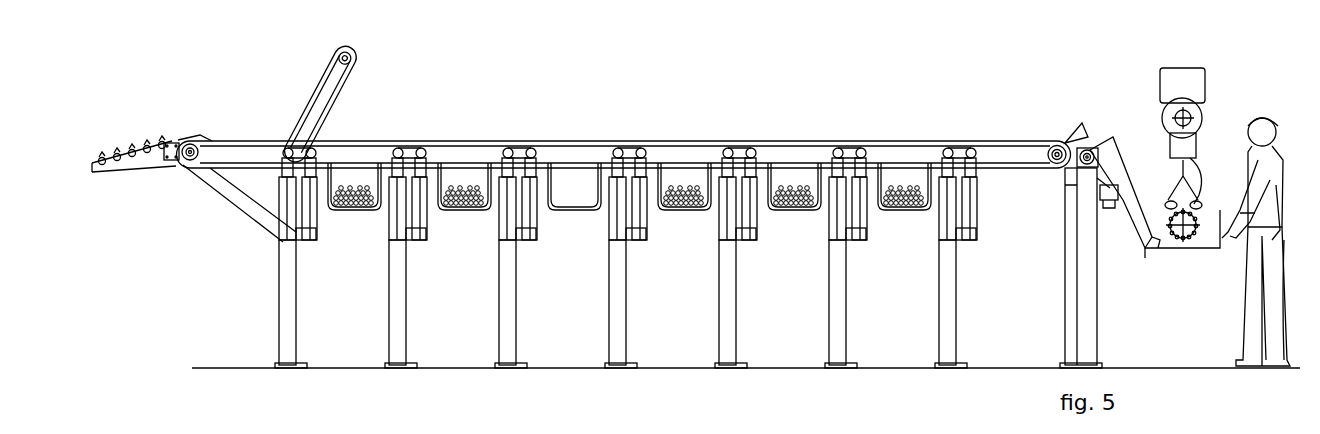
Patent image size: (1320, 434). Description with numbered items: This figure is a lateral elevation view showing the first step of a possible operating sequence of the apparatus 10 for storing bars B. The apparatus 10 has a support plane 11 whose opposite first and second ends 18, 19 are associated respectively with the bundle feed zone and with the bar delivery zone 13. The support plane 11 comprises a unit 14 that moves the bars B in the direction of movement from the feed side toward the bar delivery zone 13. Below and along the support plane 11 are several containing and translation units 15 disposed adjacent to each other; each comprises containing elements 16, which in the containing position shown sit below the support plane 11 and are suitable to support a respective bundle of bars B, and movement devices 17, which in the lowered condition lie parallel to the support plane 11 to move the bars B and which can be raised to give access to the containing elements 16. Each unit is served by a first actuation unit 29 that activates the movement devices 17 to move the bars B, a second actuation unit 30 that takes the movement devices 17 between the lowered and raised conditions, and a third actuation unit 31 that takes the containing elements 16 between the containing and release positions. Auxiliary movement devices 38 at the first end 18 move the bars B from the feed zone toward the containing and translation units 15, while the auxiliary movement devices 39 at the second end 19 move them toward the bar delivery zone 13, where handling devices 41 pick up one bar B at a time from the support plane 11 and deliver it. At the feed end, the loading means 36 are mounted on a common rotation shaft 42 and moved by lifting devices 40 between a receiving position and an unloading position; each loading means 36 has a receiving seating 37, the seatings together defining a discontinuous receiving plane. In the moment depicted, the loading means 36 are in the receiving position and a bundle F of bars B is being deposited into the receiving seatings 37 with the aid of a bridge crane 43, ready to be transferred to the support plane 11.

The apparatus 10 is at (1070, 78).
The support plane 11 is at (698, 132).
The bar delivery zone 13 is at (164, 130).
The unit to move the bars 14 is at (998, 140).
The containing and translation unit 15 is at (337, 315).
The containing element 16 is at (341, 215).
The movement device 17 is at (301, 91).
The first end 18 is at (939, 140).
The second end 19 is at (251, 140).
The first actuation unit 29 is at (316, 147).
The second actuation unit 30 is at (302, 250).
The third actuation unit 31 is at (286, 245).
The loading means 36 is at (1136, 178).
The receiving seating 37 is at (1146, 255).
The auxiliary movement device 38 is at (1058, 175).
The auxiliary movement device 39 is at (238, 178).
The lifting device 40 is at (1099, 220).
The handling device 41 is at (201, 128).
The common rotation shaft 42 is at (1091, 147).
The bridge crane 43 is at (1185, 73).
The bars B is at (350, 192).
The bundle F is at (1167, 242).